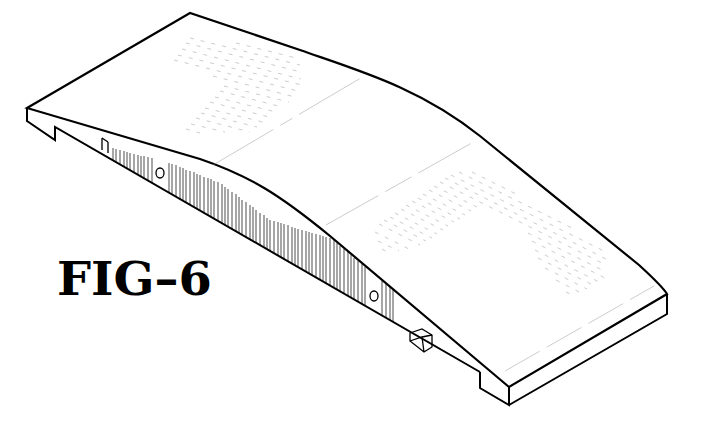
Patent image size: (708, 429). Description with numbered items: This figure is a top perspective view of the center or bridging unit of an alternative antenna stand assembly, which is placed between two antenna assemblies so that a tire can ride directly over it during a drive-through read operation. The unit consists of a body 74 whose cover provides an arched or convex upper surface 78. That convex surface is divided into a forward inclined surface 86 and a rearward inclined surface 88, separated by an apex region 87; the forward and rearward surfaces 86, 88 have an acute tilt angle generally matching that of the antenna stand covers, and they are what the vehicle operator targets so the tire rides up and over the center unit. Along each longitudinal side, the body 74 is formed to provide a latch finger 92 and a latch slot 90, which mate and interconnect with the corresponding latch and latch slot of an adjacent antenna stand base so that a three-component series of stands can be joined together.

The body 74 is at (210, 213).
The convex upper surface 78 is at (512, 187).
The forward inclined surface 86 is at (572, 243).
The apex region 87 is at (398, 100).
The rearward inclined surface 88 is at (263, 43).
The latch slot 90 is at (108, 153).
The latch finger 92 is at (419, 346).